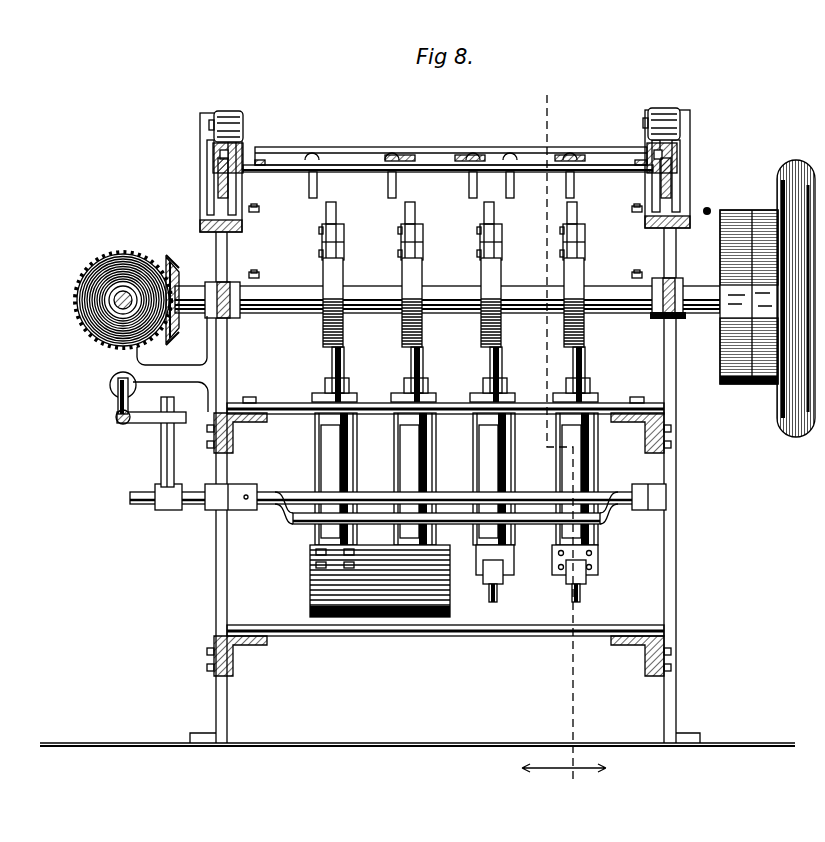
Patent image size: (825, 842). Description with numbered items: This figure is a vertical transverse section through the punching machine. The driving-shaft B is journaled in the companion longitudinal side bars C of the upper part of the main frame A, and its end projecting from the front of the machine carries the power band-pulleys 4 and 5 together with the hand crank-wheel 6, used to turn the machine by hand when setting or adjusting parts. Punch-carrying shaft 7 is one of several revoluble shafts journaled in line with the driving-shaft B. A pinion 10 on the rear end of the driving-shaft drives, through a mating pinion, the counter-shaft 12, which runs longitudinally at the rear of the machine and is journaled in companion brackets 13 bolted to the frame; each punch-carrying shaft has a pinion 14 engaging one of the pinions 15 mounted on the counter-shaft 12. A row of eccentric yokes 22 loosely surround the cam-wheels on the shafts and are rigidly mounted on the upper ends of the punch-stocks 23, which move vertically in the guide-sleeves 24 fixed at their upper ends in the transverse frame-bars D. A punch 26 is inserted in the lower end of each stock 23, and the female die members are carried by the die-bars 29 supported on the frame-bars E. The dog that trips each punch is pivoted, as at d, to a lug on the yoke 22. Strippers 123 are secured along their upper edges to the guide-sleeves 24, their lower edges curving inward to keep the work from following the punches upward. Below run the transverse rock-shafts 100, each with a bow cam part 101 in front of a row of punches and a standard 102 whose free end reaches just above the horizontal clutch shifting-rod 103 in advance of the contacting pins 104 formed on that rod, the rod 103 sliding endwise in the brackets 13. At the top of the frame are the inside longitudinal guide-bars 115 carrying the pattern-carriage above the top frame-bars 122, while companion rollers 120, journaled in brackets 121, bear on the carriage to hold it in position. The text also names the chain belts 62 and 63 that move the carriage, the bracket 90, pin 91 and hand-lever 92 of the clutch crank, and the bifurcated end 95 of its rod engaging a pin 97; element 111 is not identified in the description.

The band-pulley 4 is at (733, 218).
The band-pulley 5 is at (762, 218).
The hand crank-wheel 6 is at (798, 165).
The punch-carrying shaft 7 is at (650, 316).
The pinion 10 is at (564, 449).
The counter-shaft 12 is at (116, 309).
The brackets 13 is at (171, 374).
The pinion 14 is at (170, 263).
The pinions 15 is at (85, 298).
The eccentric yoke 22 is at (324, 276).
The punch-stocks 23 is at (331, 359).
The guide-sleeves 24 is at (548, 400).
The punch 26 is at (570, 599).
The die-bars 29 is at (540, 640).
The chain belt 62 is at (636, 214).
The chain belt 63 is at (255, 214).
The bracket 90 is at (401, 244).
The pin 91 is at (344, 229).
The hand-lever 92 is at (406, 211).
The bifurcated end 95 is at (420, 160).
The pin 97 is at (388, 185).
The rock-shafts 100 is at (138, 502).
The bow cam part 101 is at (449, 526).
The standard 102 is at (162, 462).
The clutch shifting-rod 103 is at (116, 419).
The contacting pins 104 is at (186, 405).
The pin 111 is at (716, 193).
The guide-bars 115 is at (243, 152).
The rollers 120 is at (230, 121).
The brackets 121 is at (210, 148).
The top frame-bars 122 is at (222, 186).
The strippers 123 is at (388, 620).
The main frame A is at (227, 357).
The driving-shaft B is at (706, 314).
The longitudinal side bars C is at (214, 286).
The transverse frame-bars D is at (373, 403).
The frame-bars E is at (240, 652).
The pivot d is at (320, 232).